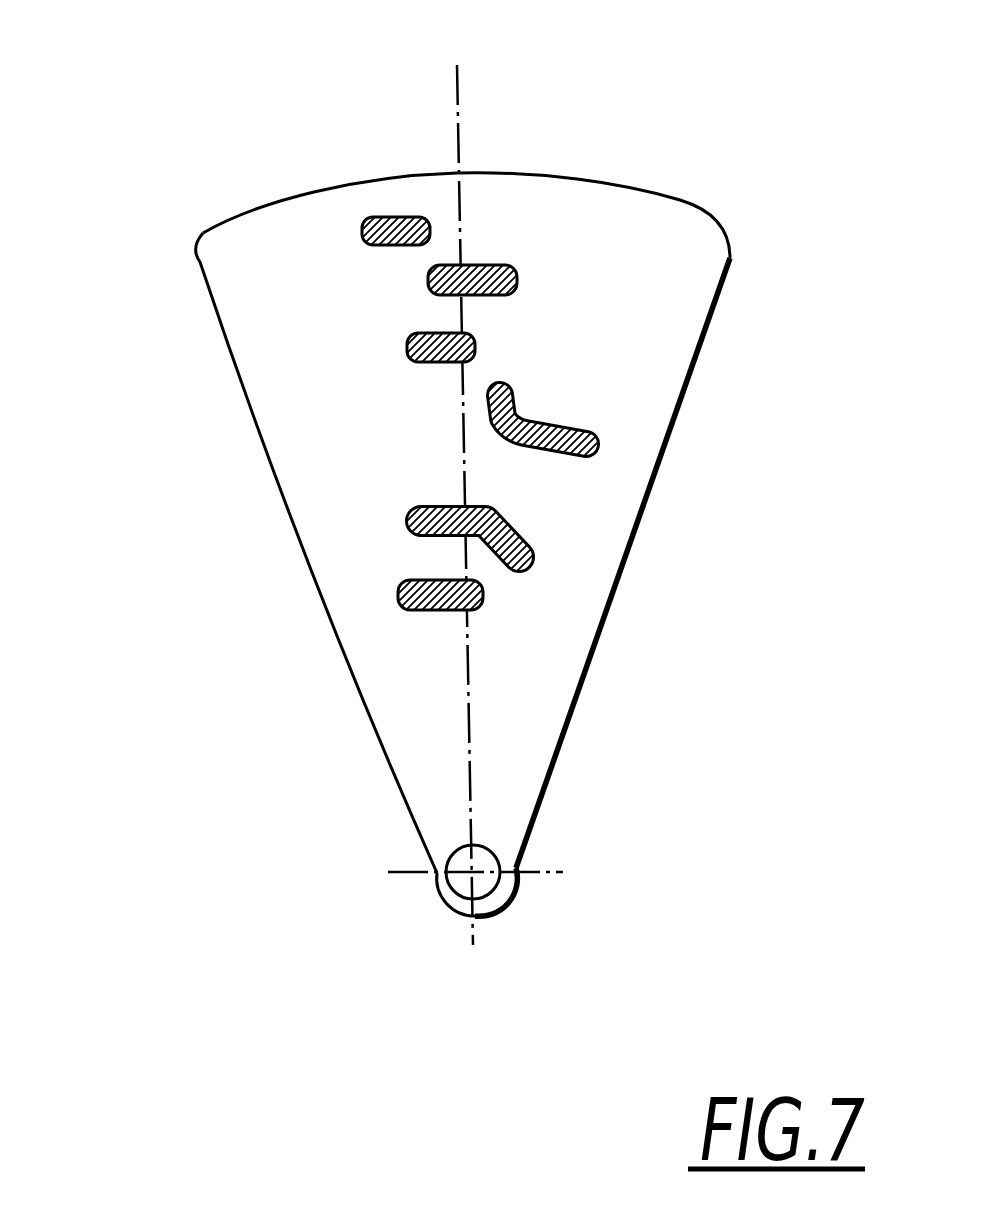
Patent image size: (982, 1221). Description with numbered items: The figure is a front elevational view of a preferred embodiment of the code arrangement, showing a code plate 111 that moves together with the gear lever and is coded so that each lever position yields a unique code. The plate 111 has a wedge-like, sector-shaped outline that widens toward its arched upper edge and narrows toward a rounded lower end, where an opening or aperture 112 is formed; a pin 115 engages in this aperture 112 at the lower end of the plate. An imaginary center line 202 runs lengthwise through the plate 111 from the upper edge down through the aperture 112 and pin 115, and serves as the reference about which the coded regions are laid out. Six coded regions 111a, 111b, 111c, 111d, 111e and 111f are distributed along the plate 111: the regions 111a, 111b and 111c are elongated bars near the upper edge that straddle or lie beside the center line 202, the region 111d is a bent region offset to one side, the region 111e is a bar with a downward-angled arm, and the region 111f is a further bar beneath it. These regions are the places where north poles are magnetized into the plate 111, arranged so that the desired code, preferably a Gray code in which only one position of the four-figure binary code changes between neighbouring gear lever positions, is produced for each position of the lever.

The code plate 111 is at (680, 200).
The coded region 111a is at (362, 231).
The coded region 111b is at (428, 281).
The coded region 111c is at (405, 347).
The coded region 111d is at (580, 428).
The coded region 111e is at (520, 542).
The coded region 111f is at (483, 596).
The opening or aperture 112 is at (443, 900).
The pin 115 is at (485, 866).
The imaginary center line 202 is at (457, 123).